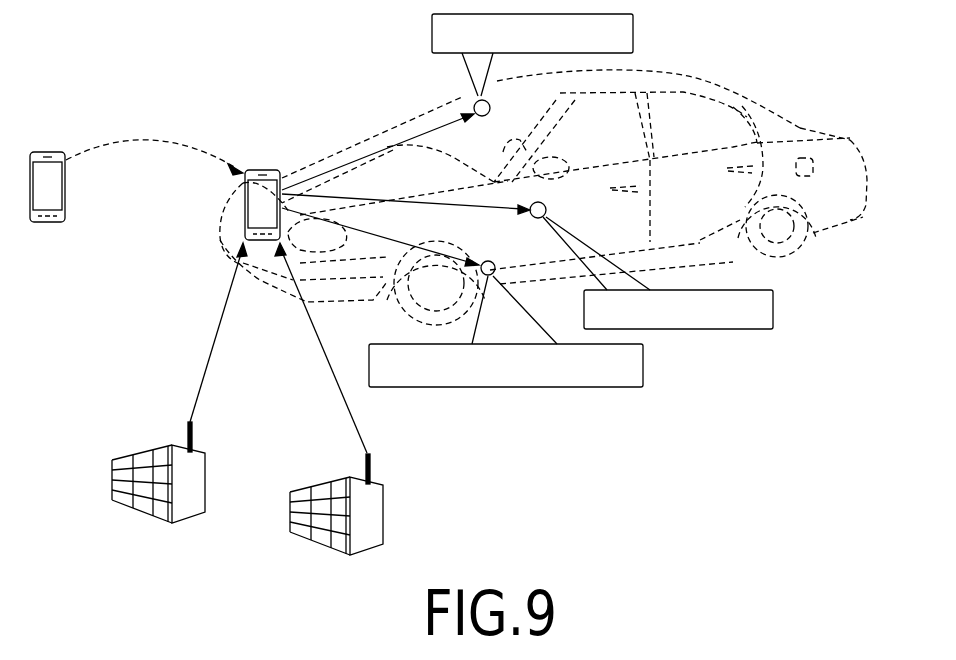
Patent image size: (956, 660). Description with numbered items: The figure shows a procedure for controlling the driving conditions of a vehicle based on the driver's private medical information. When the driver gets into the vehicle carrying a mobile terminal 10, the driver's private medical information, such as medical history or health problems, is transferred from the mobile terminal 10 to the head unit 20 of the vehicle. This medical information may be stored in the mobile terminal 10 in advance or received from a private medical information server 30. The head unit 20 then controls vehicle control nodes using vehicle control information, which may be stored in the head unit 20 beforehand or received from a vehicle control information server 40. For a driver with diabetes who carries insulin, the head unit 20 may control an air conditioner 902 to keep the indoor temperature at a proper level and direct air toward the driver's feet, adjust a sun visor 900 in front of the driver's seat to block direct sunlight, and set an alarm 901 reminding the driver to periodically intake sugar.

The mobile terminal 10 is at (47, 152).
The head unit 20 is at (264, 170).
The private medical information server 30 is at (141, 445).
The vehicle control information server 40 is at (318, 478).
The sun visor 900 is at (474, 104).
The alarm 901 is at (547, 210).
The air conditioner 902 is at (488, 261).